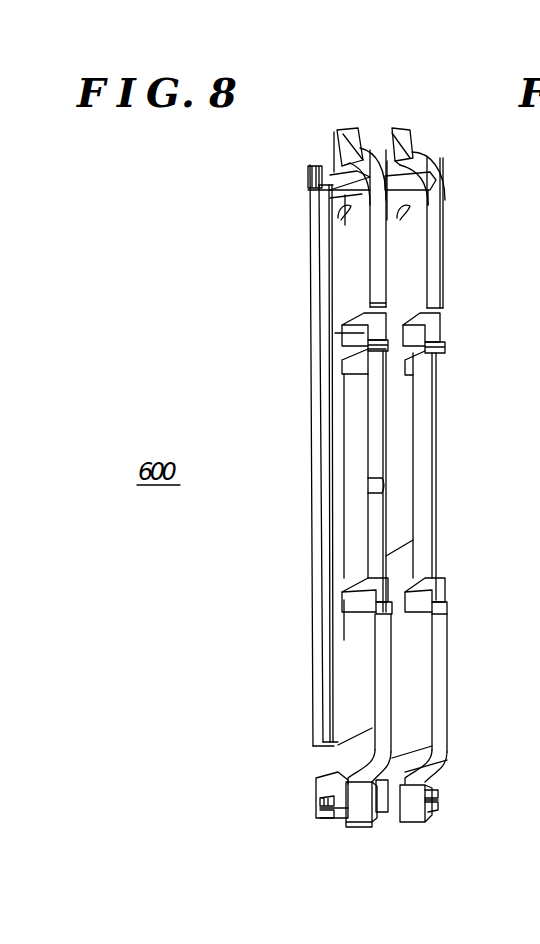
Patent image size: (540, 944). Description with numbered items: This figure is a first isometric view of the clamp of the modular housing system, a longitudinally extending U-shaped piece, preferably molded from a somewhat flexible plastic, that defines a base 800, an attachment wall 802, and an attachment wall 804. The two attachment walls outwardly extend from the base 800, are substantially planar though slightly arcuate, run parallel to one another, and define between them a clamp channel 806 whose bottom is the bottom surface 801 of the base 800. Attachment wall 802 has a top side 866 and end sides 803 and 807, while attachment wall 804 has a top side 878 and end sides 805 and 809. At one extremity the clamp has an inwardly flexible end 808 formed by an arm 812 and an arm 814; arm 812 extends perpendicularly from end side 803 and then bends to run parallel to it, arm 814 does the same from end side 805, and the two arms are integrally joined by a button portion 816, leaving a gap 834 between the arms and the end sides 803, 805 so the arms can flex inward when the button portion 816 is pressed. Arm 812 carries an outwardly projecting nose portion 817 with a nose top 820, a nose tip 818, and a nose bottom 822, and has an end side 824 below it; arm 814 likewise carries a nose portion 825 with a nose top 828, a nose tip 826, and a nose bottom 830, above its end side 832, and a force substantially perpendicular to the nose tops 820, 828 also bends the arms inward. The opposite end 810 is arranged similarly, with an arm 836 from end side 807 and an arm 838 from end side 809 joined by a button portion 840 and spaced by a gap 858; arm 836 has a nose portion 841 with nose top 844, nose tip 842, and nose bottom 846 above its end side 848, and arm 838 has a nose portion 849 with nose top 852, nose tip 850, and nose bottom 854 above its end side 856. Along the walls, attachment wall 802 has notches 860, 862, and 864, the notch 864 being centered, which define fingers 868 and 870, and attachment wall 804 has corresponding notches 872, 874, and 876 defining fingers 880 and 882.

The base 800 is at (312, 322).
The bottom surface 801 is at (428, 470).
The attachment wall 802 is at (338, 292).
The end side 803 is at (353, 236).
The attachment wall 804 is at (452, 292).
The end side 805 is at (410, 237).
The clamp channel 806 is at (430, 272).
The end side 807 is at (362, 737).
The end 808 is at (406, 109).
The end side 809 is at (418, 747).
The end 810 is at (324, 765).
The arm 812 is at (330, 150).
The arm 814 is at (446, 183).
The button portion 816 is at (318, 188).
The nose portion 817 is at (327, 158).
The nose tip 818 is at (350, 130).
The nose top 820 is at (368, 145).
The nose bottom 822 is at (345, 146).
The end side 824 is at (327, 160).
The nose portion 825 is at (414, 140).
The nose tip 826 is at (416, 142).
The nose top 828 is at (432, 170).
The nose bottom 830 is at (387, 128).
The end side 832 is at (412, 209).
The gap 834 is at (338, 214).
The arm 836 is at (382, 760).
The arm 838 is at (440, 740).
The button portion 840 is at (434, 810).
The nose portion 841 is at (334, 800).
The nose tip 842 is at (360, 834).
The nose top 844 is at (336, 812).
The nose bottom 846 is at (356, 832).
The end side 848 is at (331, 820).
The nose portion 849 is at (440, 787).
The nose tip 850 is at (428, 827).
The nose top 852 is at (440, 800).
The nose bottom 854 is at (412, 832).
The end side 856 is at (390, 820).
The gap 858 is at (354, 754).
The notch 860 is at (348, 342).
The notch 862 is at (358, 606).
The notch 864 is at (356, 557).
The top side 866 is at (358, 427).
The finger 868 is at (380, 347).
The finger 870 is at (364, 585).
The notch 872 is at (443, 320).
The notch 874 is at (445, 607).
The notch 876 is at (440, 542).
The top side 878 is at (426, 409).
The finger 880 is at (444, 347).
The finger 882 is at (446, 580).